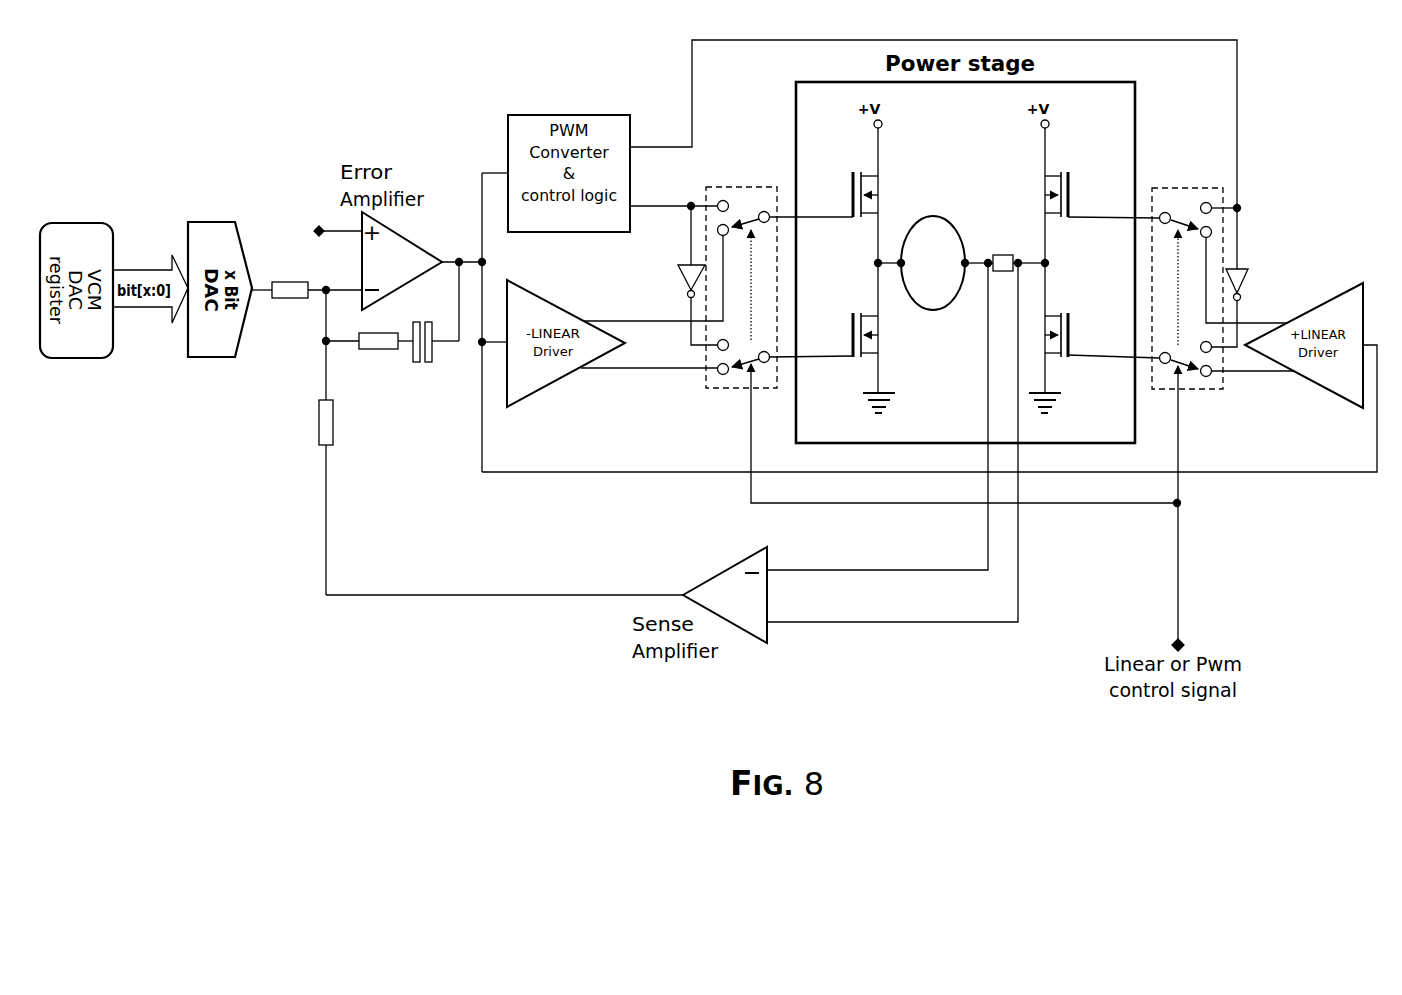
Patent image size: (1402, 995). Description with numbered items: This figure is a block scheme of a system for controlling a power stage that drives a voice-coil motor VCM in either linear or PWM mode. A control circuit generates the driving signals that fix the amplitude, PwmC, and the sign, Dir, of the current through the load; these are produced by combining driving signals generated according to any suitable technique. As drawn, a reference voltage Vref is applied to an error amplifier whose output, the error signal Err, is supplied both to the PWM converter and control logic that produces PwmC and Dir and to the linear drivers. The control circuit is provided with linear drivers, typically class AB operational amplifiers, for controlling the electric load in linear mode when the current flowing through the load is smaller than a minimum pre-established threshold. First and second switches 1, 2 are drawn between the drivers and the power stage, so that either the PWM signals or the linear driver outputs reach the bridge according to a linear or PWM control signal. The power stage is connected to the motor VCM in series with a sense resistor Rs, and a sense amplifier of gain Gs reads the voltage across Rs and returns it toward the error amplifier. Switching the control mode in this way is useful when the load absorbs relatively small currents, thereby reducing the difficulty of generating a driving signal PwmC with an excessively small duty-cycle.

The switch SW1 1 is at (741, 277).
The switch SW2 2 is at (1187, 277).
The reference voltage Vref is at (315, 232).
The error signal Err is at (464, 252).
The sign driving signal Dir is at (933, 154).
The amplitude driving signal PwmC is at (673, 199).
The voice coil motor VCM is at (933, 263).
The sense resistor Rs is at (1005, 252).
The sense amplifier Gs is at (725, 595).